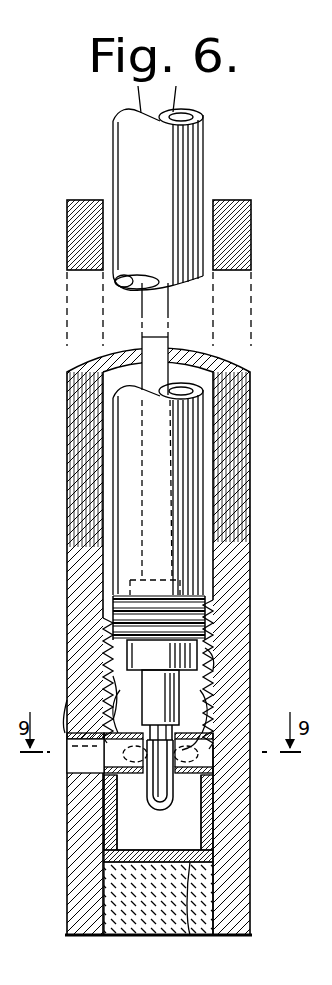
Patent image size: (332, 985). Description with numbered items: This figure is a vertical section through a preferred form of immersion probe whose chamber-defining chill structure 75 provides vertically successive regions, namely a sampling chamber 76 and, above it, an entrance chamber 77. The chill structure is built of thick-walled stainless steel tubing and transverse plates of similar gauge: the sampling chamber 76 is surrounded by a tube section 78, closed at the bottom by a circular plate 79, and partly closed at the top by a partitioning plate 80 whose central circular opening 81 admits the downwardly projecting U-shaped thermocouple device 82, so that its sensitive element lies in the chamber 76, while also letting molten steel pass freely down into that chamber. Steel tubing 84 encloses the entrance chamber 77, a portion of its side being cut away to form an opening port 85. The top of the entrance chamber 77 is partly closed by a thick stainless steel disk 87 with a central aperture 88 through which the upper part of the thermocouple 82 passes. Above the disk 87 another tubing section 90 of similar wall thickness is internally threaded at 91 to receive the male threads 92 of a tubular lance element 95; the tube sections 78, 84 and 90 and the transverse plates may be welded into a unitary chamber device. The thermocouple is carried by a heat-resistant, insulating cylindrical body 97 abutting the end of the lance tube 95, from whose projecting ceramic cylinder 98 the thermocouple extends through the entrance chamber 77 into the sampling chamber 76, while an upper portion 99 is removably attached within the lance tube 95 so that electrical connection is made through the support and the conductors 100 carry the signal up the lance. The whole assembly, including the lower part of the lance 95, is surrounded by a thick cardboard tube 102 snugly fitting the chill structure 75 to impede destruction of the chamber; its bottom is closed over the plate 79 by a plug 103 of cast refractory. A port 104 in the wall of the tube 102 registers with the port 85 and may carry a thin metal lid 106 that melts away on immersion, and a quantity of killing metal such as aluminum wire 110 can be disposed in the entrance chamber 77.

The chamber-defining chill structure 75 is at (103, 833).
The sampling chamber 76 is at (127, 838).
The entrance chamber 77 is at (208, 768).
The tube section 78 is at (214, 788).
The circular plate 79 is at (192, 862).
The partitioning plate 80 is at (214, 810).
The central circular opening 81 is at (215, 838).
The U-shaped thermocouple device 82 is at (146, 862).
The steel tubing 84 is at (205, 742).
The opening port 85 is at (110, 752).
The thick disk of stainless steel 87 is at (210, 700).
The central aperture 88 is at (133, 707).
The tubing section 90 is at (120, 624).
The internal threads 91 is at (122, 676).
The male threads 92 is at (204, 605).
The tubular lance element 95 is at (190, 160).
The cylindrical body 97 is at (198, 652).
The projecting ceramic cylinder 98 is at (178, 690).
The upper portion 99 is at (67, 545).
The conductors 100 is at (170, 340).
The thick cardboard tube 102 is at (236, 481).
The plug of cast refractory 103 is at (148, 925).
The port 104 is at (66, 732).
The thin metal lid 106 is at (66, 760).
The aluminum wire 110 is at (115, 797).